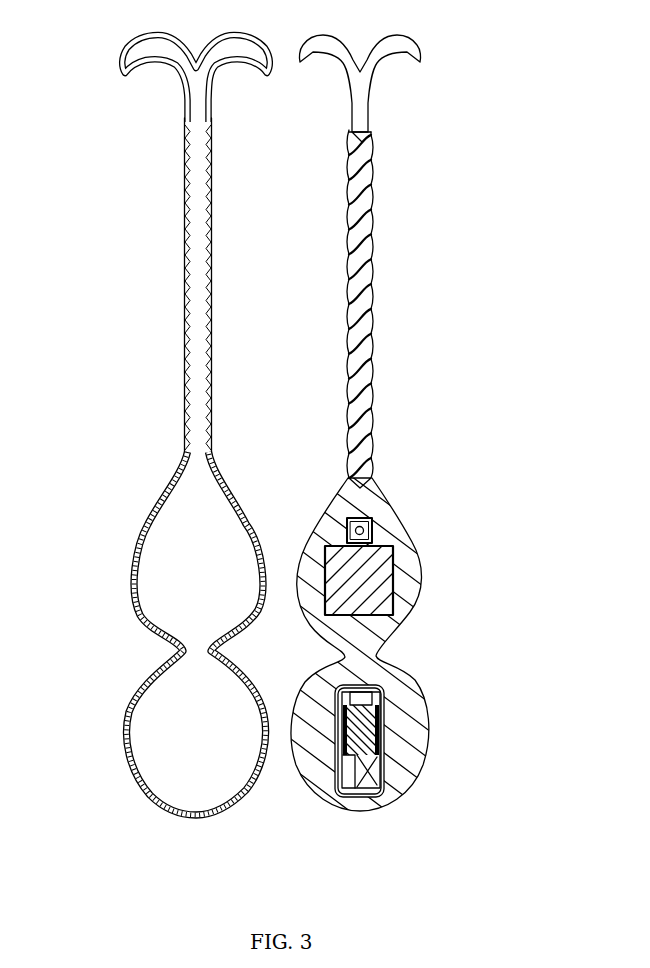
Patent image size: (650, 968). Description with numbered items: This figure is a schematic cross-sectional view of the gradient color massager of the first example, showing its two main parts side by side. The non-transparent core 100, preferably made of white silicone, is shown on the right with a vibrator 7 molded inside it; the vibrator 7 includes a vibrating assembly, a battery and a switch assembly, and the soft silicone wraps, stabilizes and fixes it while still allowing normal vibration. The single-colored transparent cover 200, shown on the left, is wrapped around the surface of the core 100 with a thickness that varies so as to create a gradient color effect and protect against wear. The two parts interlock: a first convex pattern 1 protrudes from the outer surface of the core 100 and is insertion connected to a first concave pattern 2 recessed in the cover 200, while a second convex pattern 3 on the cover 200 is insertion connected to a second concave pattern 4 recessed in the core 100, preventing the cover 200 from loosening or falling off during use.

The non-transparent core 100 is at (403, 523).
The single-colored transparent cover 200 is at (152, 513).
The first convex pattern 1 is at (427, 721).
The first concave pattern 2 is at (129, 711).
The second convex pattern 3 is at (125, 742).
The second concave pattern 4 is at (428, 738).
The vibrator 7 is at (388, 768).